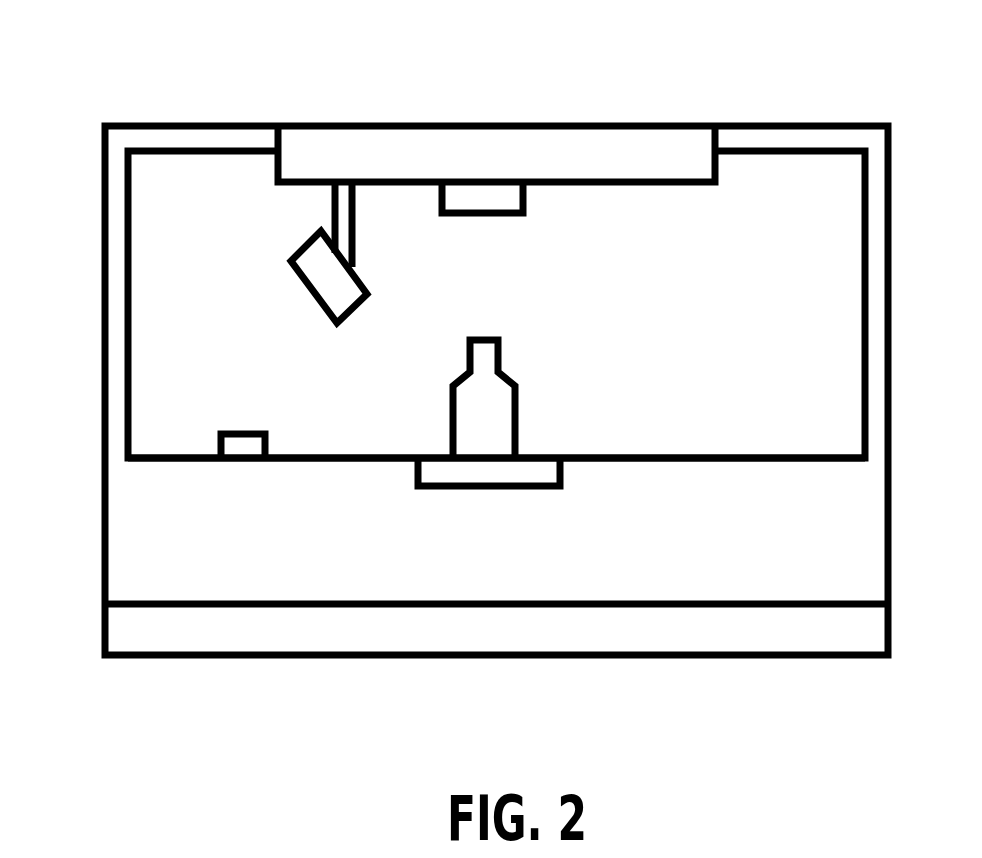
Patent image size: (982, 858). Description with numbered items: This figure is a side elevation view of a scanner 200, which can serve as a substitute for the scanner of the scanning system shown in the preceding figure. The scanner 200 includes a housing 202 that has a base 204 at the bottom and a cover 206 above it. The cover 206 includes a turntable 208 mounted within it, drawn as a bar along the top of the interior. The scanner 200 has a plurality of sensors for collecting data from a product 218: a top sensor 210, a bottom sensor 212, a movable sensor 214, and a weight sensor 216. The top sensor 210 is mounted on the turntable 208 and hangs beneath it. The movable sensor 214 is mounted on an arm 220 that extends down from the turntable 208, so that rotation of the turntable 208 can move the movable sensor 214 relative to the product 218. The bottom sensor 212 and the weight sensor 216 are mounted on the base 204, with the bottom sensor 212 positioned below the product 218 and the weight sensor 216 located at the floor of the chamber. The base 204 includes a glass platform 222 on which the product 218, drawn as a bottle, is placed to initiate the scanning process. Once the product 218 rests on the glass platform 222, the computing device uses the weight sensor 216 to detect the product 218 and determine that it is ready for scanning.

The scanner 200 is at (308, 64).
The housing 202 is at (102, 342).
The base 204 is at (703, 593).
The cover 206 is at (758, 122).
The turntable 208 is at (513, 153).
The top sensor 210 is at (480, 199).
The bottom sensor 212 is at (487, 472).
The movable sensor 214 is at (303, 290).
The weight sensor 216 is at (232, 430).
The product 218 is at (507, 408).
The arm 220 is at (334, 200).
The glass platform 222 is at (343, 455).